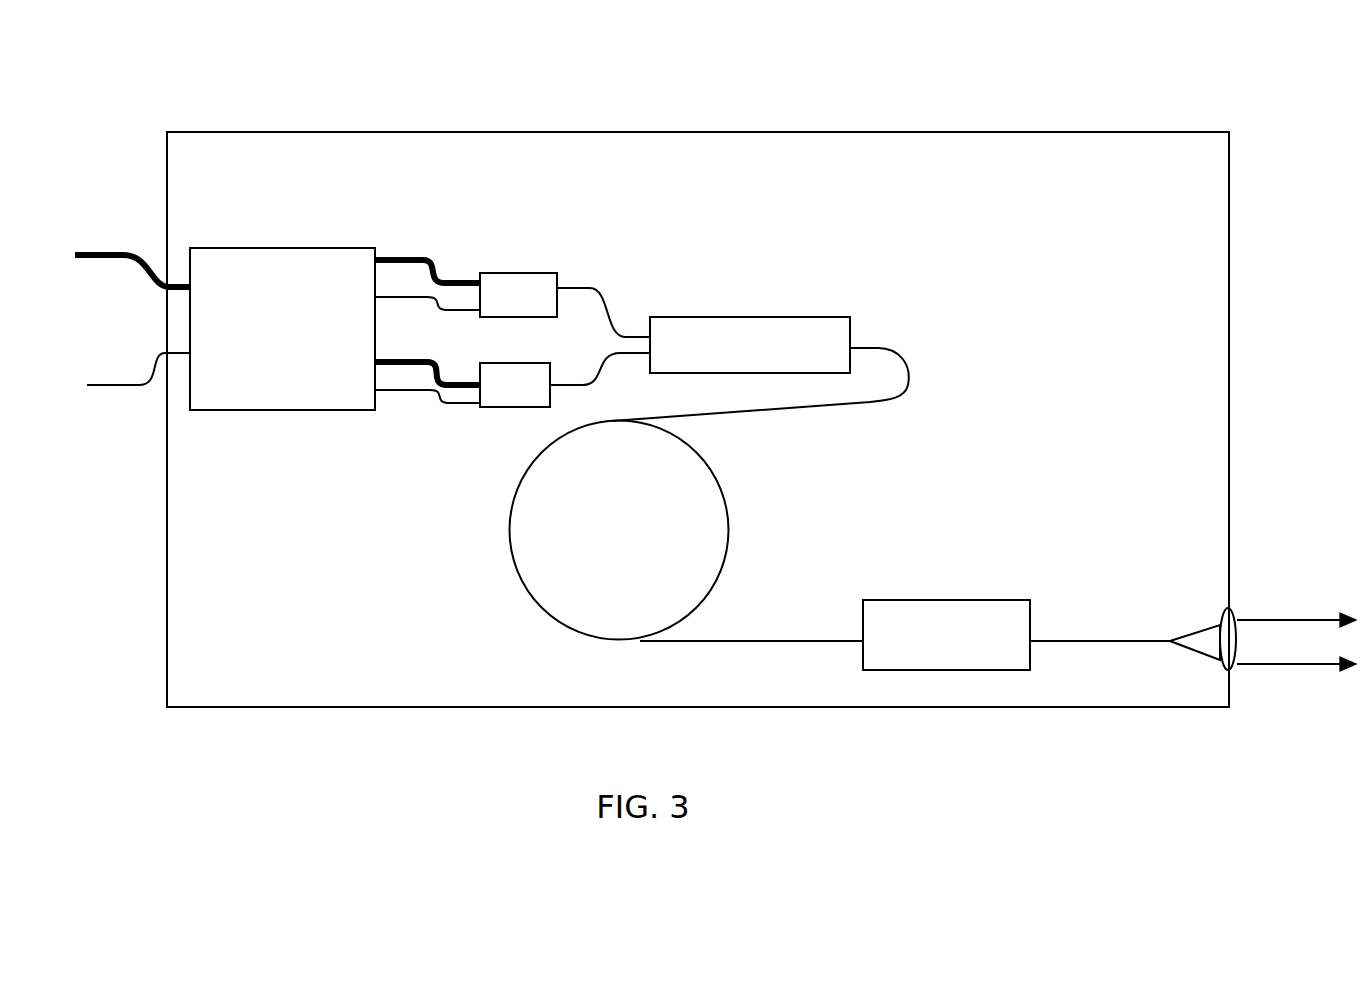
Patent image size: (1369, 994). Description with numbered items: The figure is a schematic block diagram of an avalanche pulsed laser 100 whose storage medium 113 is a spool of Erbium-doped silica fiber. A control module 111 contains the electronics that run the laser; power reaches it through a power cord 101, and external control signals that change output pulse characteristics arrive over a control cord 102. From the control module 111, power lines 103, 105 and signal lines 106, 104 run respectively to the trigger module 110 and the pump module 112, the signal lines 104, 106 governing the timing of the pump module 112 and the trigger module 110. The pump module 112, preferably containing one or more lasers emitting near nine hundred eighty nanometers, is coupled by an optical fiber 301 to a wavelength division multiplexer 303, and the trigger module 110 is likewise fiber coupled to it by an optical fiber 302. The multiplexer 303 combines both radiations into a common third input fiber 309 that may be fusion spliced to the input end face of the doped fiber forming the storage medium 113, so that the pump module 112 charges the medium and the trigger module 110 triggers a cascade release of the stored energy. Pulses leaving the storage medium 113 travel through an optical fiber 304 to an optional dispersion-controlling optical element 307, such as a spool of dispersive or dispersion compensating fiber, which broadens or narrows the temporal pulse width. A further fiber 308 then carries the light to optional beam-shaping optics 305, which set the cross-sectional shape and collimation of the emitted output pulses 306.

The avalanche pulsed laser 100 is at (933, 131).
The power cord 101 is at (118, 253).
The control cord 102 is at (98, 387).
The power line 103 is at (441, 405).
The signal line 104 is at (393, 392).
The power line 105 is at (420, 258).
The signal line 106 is at (467, 309).
The trigger module 110 is at (517, 273).
The control module 111 is at (293, 248).
The pump module 112 is at (520, 408).
The storage medium 113 is at (507, 522).
The optical fiber 301 is at (588, 291).
The optical fiber 302 is at (617, 353).
The wavelength division multiplexer 303 is at (793, 316).
The optical fiber 304 is at (752, 639).
The beam-shaping optics 305 is at (1226, 608).
The output pulses 306 is at (1310, 619).
The dispersion-controlling optical element 307 is at (953, 600).
The output fiber 308 is at (1087, 640).
The input fiber 309 is at (903, 362).